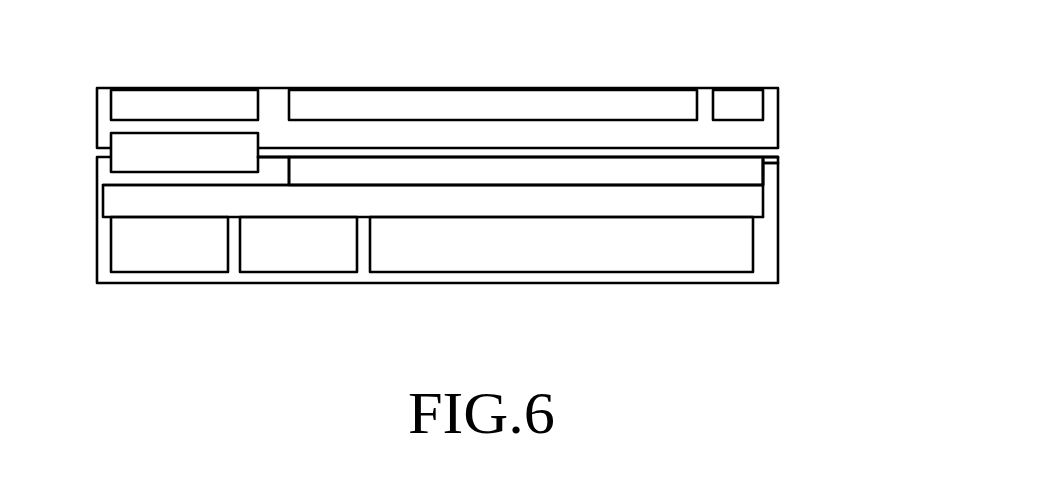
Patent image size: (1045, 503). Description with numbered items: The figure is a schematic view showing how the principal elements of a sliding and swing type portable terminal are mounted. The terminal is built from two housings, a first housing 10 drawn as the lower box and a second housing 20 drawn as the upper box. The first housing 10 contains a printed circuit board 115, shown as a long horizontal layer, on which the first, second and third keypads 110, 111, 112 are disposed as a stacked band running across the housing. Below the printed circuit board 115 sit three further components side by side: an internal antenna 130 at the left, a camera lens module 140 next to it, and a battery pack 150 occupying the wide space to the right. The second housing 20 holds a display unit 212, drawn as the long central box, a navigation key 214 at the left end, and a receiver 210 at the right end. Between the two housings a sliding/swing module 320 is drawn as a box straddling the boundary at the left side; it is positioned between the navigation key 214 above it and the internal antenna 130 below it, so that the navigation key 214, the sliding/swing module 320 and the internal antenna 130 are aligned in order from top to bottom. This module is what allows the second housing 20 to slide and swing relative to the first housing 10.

The first housing 10 is at (411, 303).
The second housing 20 is at (606, 76).
The first keypad 110 is at (763, 173).
The second keypad 111 is at (763, 173).
The third keypad 112 is at (763, 173).
The printed circuit board 115 is at (762, 202).
The internal antenna 130 is at (167, 258).
The camera lens module 140 is at (295, 258).
The battery pack 150 is at (580, 258).
The receiver 210 is at (740, 98).
The display unit 212 is at (497, 98).
The navigation key 214 is at (181, 98).
The sliding/swing module 320 is at (110, 150).